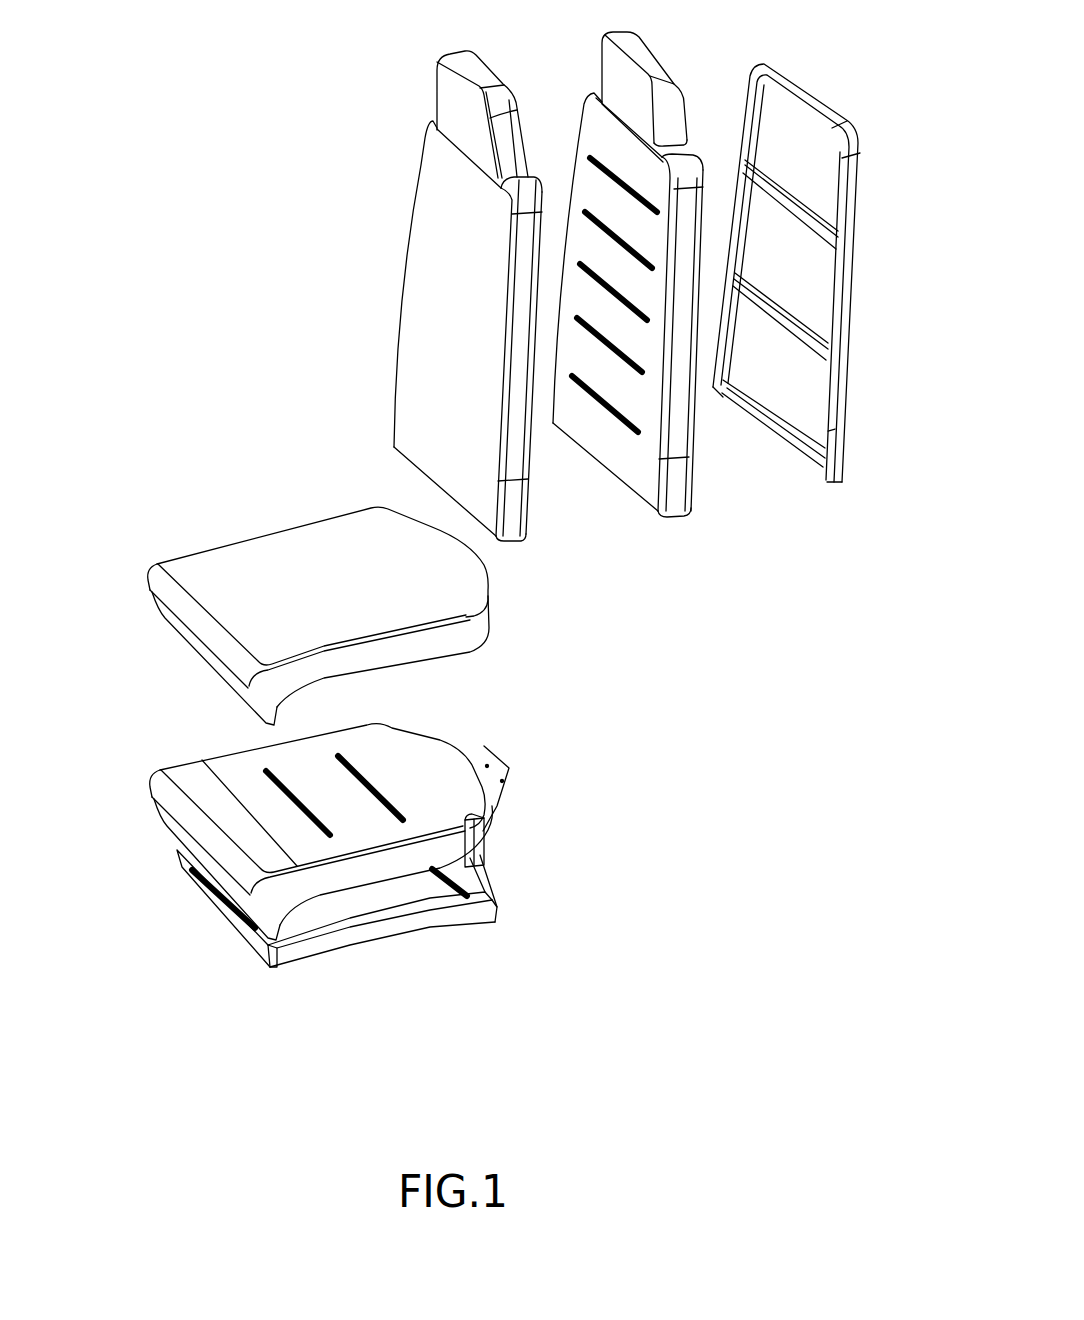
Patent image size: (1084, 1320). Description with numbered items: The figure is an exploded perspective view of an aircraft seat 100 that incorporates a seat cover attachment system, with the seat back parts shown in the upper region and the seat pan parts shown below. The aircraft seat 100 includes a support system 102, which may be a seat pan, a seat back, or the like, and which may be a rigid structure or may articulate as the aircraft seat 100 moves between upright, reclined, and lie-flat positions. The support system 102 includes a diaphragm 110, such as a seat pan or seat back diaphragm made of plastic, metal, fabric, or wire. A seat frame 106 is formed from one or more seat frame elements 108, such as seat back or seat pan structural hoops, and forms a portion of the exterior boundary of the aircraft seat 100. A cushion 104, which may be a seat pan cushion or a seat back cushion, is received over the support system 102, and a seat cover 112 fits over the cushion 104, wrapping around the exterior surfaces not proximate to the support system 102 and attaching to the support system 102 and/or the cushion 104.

The aircraft seat 100 is at (179, 167).
The support system 102 is at (723, 689).
The cushion 104 is at (672, 510).
The seat frame 106 is at (793, 521).
The seat frame element 108 is at (838, 476).
The diaphragm 110 is at (790, 411).
The seat cover 112 is at (508, 540).